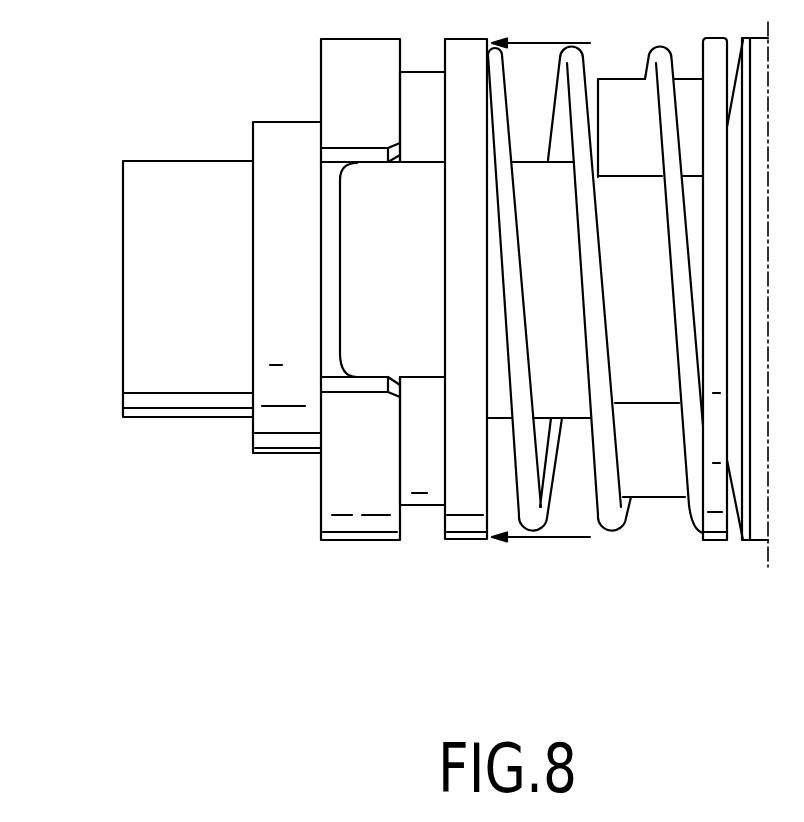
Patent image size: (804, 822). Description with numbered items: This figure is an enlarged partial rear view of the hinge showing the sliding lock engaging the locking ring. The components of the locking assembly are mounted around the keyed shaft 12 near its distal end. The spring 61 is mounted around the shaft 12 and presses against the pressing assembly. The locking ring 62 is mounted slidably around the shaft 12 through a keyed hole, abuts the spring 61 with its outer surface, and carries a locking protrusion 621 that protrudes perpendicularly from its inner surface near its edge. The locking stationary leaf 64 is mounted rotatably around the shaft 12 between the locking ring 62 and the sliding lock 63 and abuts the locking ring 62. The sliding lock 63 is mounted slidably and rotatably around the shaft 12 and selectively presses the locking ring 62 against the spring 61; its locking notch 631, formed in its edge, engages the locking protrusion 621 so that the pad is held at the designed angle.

The shaft 12 is at (123, 192).
The spring 61 is at (608, 530).
The locking ring 62 is at (482, 533).
The sliding lock 63 is at (340, 506).
The locking stationary leaf 64 is at (420, 490).
The locking protrusion 621 is at (347, 268).
The locking notch 631 is at (333, 343).